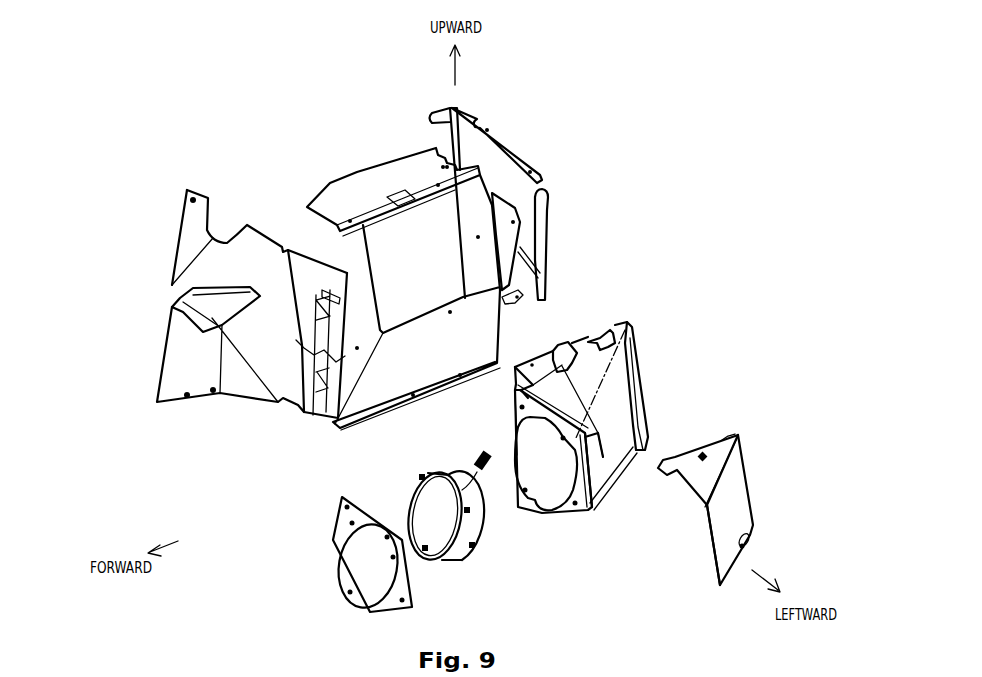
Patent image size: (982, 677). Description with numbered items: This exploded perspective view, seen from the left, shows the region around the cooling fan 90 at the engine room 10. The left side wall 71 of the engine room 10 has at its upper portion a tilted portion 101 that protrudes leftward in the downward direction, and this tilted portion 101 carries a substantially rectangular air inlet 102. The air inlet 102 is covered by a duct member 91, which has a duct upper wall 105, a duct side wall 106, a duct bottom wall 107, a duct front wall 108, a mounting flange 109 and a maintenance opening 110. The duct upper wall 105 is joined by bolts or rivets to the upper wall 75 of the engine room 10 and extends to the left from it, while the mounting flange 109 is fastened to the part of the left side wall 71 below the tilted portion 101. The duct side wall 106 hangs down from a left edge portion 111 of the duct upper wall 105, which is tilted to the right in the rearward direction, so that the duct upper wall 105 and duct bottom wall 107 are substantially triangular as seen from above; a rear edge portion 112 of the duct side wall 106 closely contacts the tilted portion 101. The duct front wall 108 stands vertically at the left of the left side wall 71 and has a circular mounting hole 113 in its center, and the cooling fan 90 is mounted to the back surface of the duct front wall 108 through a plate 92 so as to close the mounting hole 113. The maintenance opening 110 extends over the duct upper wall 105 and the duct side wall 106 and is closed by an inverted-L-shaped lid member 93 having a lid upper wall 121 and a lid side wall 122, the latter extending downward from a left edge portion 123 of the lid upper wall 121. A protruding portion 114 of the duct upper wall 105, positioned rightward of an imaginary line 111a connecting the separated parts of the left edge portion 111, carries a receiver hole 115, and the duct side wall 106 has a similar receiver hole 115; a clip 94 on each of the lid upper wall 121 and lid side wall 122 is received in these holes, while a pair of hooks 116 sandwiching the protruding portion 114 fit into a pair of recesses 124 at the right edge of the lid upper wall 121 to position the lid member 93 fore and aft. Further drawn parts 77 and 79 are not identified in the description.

The engine room 10 is at (289, 176).
The left side wall 71 is at (347, 400).
The upper wall 75 is at (362, 185).
The support bracket 77 is at (552, 197).
The front panel 79 is at (163, 405).
The cooling fan 90 is at (478, 552).
The duct member 91 is at (641, 312).
The plate 92 is at (337, 518).
The lid member 93 is at (758, 486).
The clip 94 is at (750, 536).
The tilted portion 101 is at (480, 212).
The air inlet 102 is at (465, 198).
The duct upper wall 105 is at (515, 393).
The duct side wall 106 is at (600, 508).
The duct bottom wall 107 is at (530, 498).
The duct front wall 108 is at (513, 412).
The mounting flange 109 is at (650, 443).
The maintenance opening 110 is at (645, 395).
The left edge portion 111 is at (655, 332).
The imaginary line 111a is at (640, 345).
The rear edge portion 112 is at (650, 420).
The mounting hole 113 is at (510, 430).
The protruding portion 114 is at (583, 345).
The receiver hole 115 is at (592, 340).
The hooks 116 is at (605, 340).
The lid upper wall 121 is at (720, 502).
The lid side wall 122 is at (738, 502).
The left edge portion 123 is at (745, 440).
The recesses 124 is at (740, 432).